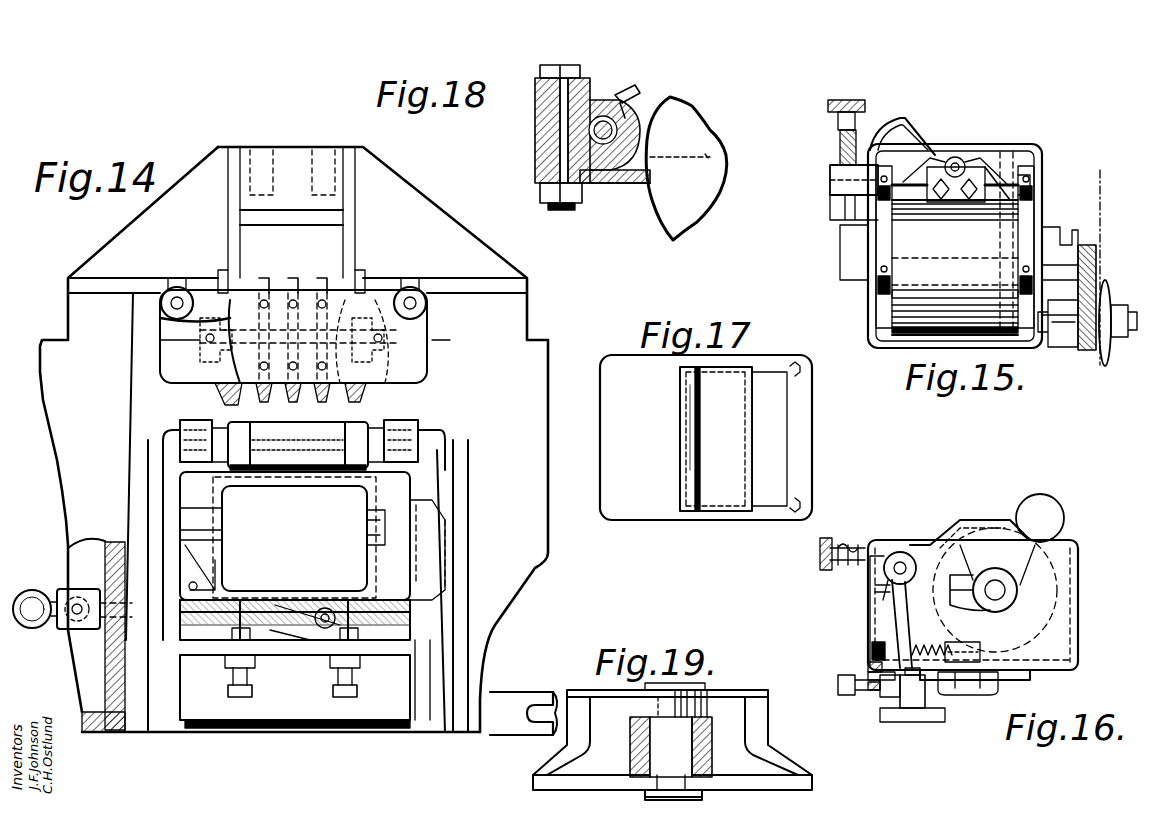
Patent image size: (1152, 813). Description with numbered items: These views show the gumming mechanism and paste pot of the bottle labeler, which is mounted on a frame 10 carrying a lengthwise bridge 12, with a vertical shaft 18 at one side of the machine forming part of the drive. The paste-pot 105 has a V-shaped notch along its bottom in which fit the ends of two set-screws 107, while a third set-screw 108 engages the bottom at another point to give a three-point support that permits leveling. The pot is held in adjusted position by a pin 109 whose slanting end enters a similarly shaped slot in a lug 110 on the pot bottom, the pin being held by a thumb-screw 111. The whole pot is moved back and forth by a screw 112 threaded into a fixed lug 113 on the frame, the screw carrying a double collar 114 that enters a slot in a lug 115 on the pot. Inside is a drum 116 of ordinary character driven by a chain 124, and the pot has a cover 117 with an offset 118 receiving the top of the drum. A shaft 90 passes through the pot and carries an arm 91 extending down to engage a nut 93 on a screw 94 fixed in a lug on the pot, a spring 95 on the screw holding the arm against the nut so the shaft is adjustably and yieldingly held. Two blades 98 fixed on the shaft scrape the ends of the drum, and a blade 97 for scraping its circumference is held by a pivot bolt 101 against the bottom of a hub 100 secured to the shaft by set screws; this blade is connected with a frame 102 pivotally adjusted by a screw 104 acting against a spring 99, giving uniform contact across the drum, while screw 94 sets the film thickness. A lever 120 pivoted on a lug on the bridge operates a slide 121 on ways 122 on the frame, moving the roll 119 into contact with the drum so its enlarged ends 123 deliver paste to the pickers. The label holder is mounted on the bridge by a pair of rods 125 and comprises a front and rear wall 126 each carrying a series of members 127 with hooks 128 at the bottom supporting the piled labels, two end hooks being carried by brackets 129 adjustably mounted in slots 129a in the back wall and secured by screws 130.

In FIG. 14, the frame 10 is at (72, 505).
In FIG. 14, the bridge 12 is at (475, 222).
In FIG. 15, the vertical shaft 18 is at (962, 157).
In FIG. 18, the shaft 90 is at (575, 145).
In FIG. 15, the shaft 90 is at (830, 181).
In FIG. 16, the shaft 90 is at (886, 570).
In FIG. 16, the arm 91 is at (911, 624).
In FIG. 16, the nut 93 is at (885, 637).
In FIG. 16, the screw 94 is at (966, 655).
In FIG. 16, the spring 95 is at (932, 638).
In FIG. 18, the blade 97 is at (625, 183).
In FIG. 15, the blade 97 is at (1035, 180).
In FIG. 19, the blade 97 is at (755, 785).
In FIG. 18, the blades 98 is at (686, 168).
In FIG. 15, the blades 98 is at (1035, 218).
In FIG. 15, the spring 99 is at (840, 152).
In FIG. 16, the spring 99 is at (876, 545).
In FIG. 18, the hub 100 is at (595, 100).
In FIG. 15, the hub 100 is at (985, 165).
In FIG. 18, the pivot bolt 101 is at (552, 105).
In FIG. 15, the pivot bolt 101 is at (948, 158).
In FIG. 15, the frame 102 is at (880, 130).
In FIG. 16, the frame 102 is at (836, 538).
In FIG. 19, the frame 102 is at (524, 693).
In FIG. 15, the screw 104 is at (840, 108).
In FIG. 16, the screw 104 is at (822, 565).
In FIG. 14, the paste-pot 105 is at (324, 586).
In FIG. 15, the paste-pot 105 is at (874, 340).
In FIG. 16, the paste-pot 105 is at (1075, 570).
In FIG. 14, the set-screws 107 is at (358, 682).
In FIG. 14, the set-screw 108 is at (252, 707).
In FIG. 14, the pin 109 is at (281, 512).
In FIG. 14, the lug 110 is at (290, 640).
In FIG. 14, the thumb-screw 111 is at (68, 597).
In FIG. 14, the screw 112 is at (318, 626).
In FIG. 16, the screw 112 is at (930, 690).
In FIG. 16, the fixed lug 113 is at (910, 705).
In FIG. 16, the double collar 114 is at (868, 690).
In FIG. 16, the lug 115 is at (868, 668).
In FIG. 18, the drum 116 is at (685, 115).
In FIG. 15, the drum 116 is at (892, 313).
In FIG. 16, the drum 116 is at (1070, 630).
In FIG. 17, the cover 117 is at (706, 437).
In FIG. 16, the cover 117 is at (935, 540).
In FIG. 17, the offset 118 is at (722, 508).
In FIG. 16, the offset 118 is at (975, 520).
In FIG. 14, the roll 119 is at (298, 446).
In FIG. 16, the roll 119 is at (1042, 496).
In FIG. 14, the lever 120 is at (232, 328).
In FIG. 14, the slide 121 is at (196, 430).
In FIG. 14, the ways 122 is at (170, 445).
In FIG. 14, the enlarged ends 123 is at (232, 470).
In FIG. 15, the chain 124 is at (1100, 204).
In FIG. 14, the rods 125 is at (165, 312).
In FIG. 14, the front and rear wall 126 is at (160, 340).
In FIG. 14, the members 127 is at (322, 278).
In FIG. 14, the hooks 128 is at (222, 398).
In FIG. 14, the brackets 129 is at (208, 342).
In FIG. 14, the slots 129a is at (372, 260).
In FIG. 14, the screws 130 is at (395, 293).